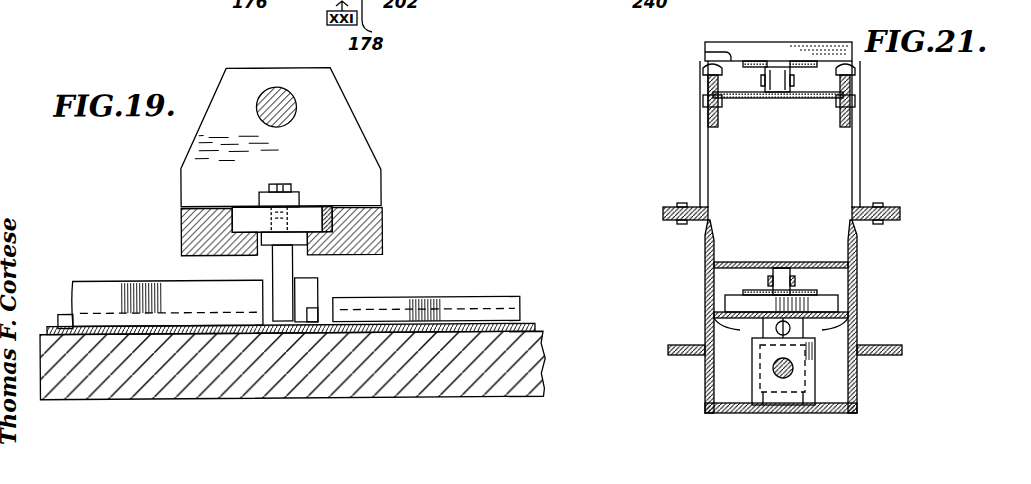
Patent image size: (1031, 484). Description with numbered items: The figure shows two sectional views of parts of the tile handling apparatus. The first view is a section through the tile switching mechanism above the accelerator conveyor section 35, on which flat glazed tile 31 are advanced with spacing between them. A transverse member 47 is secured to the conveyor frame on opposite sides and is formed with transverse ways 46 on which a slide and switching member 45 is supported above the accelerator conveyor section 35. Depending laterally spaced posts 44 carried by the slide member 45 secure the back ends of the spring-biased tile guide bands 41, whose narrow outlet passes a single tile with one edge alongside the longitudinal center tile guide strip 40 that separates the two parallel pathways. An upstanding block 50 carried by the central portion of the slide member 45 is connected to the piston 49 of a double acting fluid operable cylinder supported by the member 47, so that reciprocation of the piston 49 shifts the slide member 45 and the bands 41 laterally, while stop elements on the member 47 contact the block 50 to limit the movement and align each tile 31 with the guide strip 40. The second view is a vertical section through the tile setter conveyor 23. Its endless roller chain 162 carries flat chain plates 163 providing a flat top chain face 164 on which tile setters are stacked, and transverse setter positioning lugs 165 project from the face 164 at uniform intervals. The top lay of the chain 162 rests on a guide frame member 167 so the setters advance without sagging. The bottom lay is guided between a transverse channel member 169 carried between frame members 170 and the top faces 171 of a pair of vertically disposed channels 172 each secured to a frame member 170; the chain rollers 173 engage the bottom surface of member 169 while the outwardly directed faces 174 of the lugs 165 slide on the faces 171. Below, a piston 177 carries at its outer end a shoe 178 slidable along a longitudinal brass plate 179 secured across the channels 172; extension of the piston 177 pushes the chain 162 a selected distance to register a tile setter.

In FIG. 19, the piston 49 is at (297, 100).
In FIG. 19, the upstanding block 50 is at (383, 152).
In FIG. 19, the slide and switching member 45 is at (248, 215).
In FIG. 19, the transverse member 47 is at (381, 236).
In FIG. 19, the depending post 44 is at (273, 268).
In FIG. 19, the transverse ways 46 is at (315, 240).
In FIG. 19, the tile guide band 41 is at (114, 282).
In FIG. 19, the tile 31 is at (68, 313).
In FIG. 19, the center tile guide strip 40 is at (446, 298).
In FIG. 19, the accelerator conveyor section 35 is at (537, 325).
In FIG. 21, the setter positioning lug 165 is at (757, 43).
In FIG. 21, the top chain face 164 is at (706, 54).
In FIG. 21, the tile setter conveyor 23 is at (699, 80).
In FIG. 21, the chain plate 163 is at (848, 80).
In FIG. 21, the guide frame member 167 is at (766, 95).
In FIG. 21, the endless roller chain 162 is at (798, 73).
In FIG. 21, the frame member 170 is at (704, 256).
In FIG. 21, the chain roller 173 is at (783, 262).
In FIG. 21, the transverse channel member 169 is at (822, 250).
In FIG. 21, the top face of channel 171 is at (850, 305).
In FIG. 21, the outwardly directed face of lug 174 is at (718, 316).
In FIG. 21, the piston 177 is at (773, 368).
In FIG. 21, the vertically disposed channel 172 is at (857, 372).
In FIG. 21, the shoe 178 is at (778, 402).
In FIG. 21, the brass plate 179 is at (838, 413).